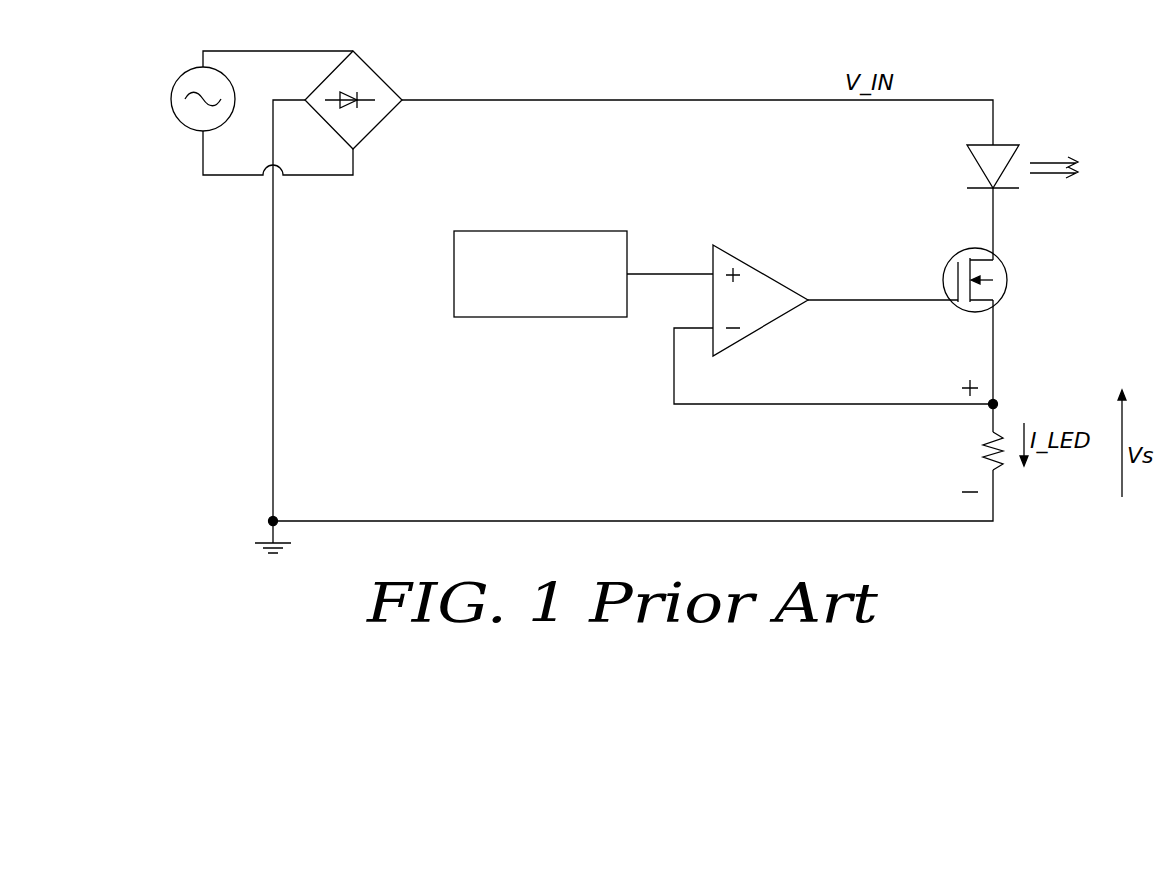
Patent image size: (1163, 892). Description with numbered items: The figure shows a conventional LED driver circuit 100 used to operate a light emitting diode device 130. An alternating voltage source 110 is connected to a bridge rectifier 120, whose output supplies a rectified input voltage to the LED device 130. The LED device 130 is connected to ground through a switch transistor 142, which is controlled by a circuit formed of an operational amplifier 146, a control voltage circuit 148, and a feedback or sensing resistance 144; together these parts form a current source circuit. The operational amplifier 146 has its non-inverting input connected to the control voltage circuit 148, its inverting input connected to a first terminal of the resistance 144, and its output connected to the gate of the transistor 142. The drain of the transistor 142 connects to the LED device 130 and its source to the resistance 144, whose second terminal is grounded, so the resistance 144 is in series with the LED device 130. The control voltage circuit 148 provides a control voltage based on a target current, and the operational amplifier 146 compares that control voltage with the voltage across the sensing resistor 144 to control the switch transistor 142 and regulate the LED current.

The driver circuit 100 is at (220, 466).
The alternating voltage source 110 is at (171, 99).
The bridge rectifier 120 is at (377, 74).
The LED device 130 is at (980, 173).
The transistor S1 142 is at (1008, 277).
The feedback resistance 144 is at (980, 458).
The operational amplifier 146 is at (772, 276).
The control voltage circuit 148 is at (563, 231).